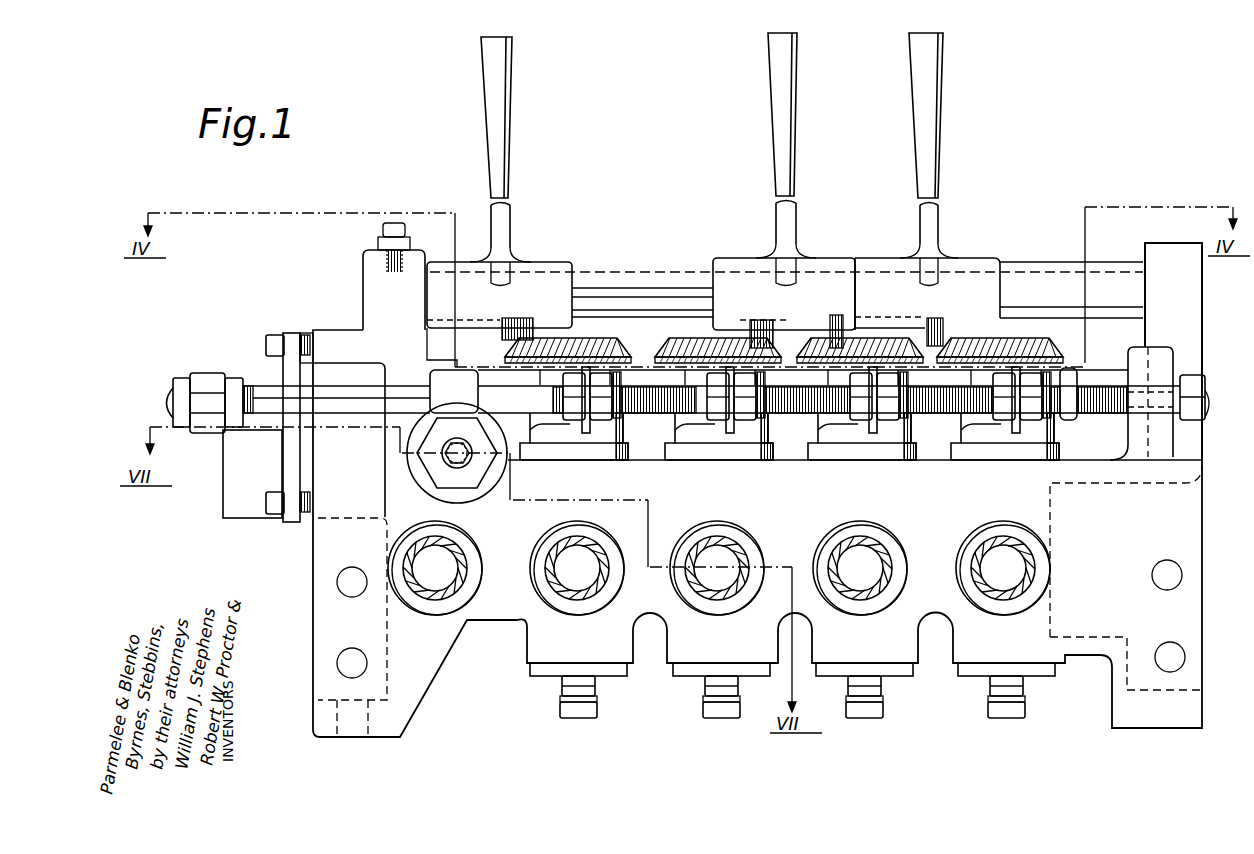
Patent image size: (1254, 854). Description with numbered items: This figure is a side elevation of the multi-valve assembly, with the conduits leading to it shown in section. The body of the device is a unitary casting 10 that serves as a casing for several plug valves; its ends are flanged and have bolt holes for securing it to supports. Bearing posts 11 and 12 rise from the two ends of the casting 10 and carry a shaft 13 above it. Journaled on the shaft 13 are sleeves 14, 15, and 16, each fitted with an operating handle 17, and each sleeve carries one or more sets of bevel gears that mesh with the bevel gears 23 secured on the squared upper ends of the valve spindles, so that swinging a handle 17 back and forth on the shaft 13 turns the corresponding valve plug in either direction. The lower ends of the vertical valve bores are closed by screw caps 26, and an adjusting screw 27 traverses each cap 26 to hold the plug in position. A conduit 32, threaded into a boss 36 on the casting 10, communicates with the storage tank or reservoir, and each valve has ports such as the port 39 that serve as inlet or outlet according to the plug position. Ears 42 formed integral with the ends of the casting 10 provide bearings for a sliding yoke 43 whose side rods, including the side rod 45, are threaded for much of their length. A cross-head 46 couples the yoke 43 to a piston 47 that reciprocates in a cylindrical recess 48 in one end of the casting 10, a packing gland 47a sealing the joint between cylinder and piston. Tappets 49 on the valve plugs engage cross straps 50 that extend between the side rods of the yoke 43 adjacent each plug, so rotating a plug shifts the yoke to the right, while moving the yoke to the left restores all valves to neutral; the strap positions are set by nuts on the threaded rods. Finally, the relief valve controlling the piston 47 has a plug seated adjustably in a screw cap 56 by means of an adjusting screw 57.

The unitary casting 10 is at (508, 606).
The bearing post 11 is at (363, 258).
The bearing post 12 is at (1163, 252).
The shaft 13 is at (637, 276).
The sleeve 14 is at (540, 264).
The sleeve 15 is at (821, 262).
The sleeve 16 is at (963, 262).
The operating handle 17 is at (506, 131).
The bevel gear 23 is at (676, 344).
The screw cap 26 is at (690, 668).
The adjusting screw 27 is at (728, 699).
The conduit 32 is at (420, 583).
The boss 36 is at (470, 567).
The port 39 is at (823, 555).
The ear 42 is at (338, 376).
The sliding yoke 43 is at (234, 380).
The side rod 45 is at (940, 407).
The cross-head 46 is at (196, 392).
The piston 47 is at (240, 470).
The packing gland 47a is at (288, 336).
The cylindrical recess 48 is at (322, 345).
The tappet 49 is at (710, 432).
The cross strap 50 is at (600, 424).
The screw cap 56 is at (463, 483).
The adjusting screw 57 is at (443, 460).